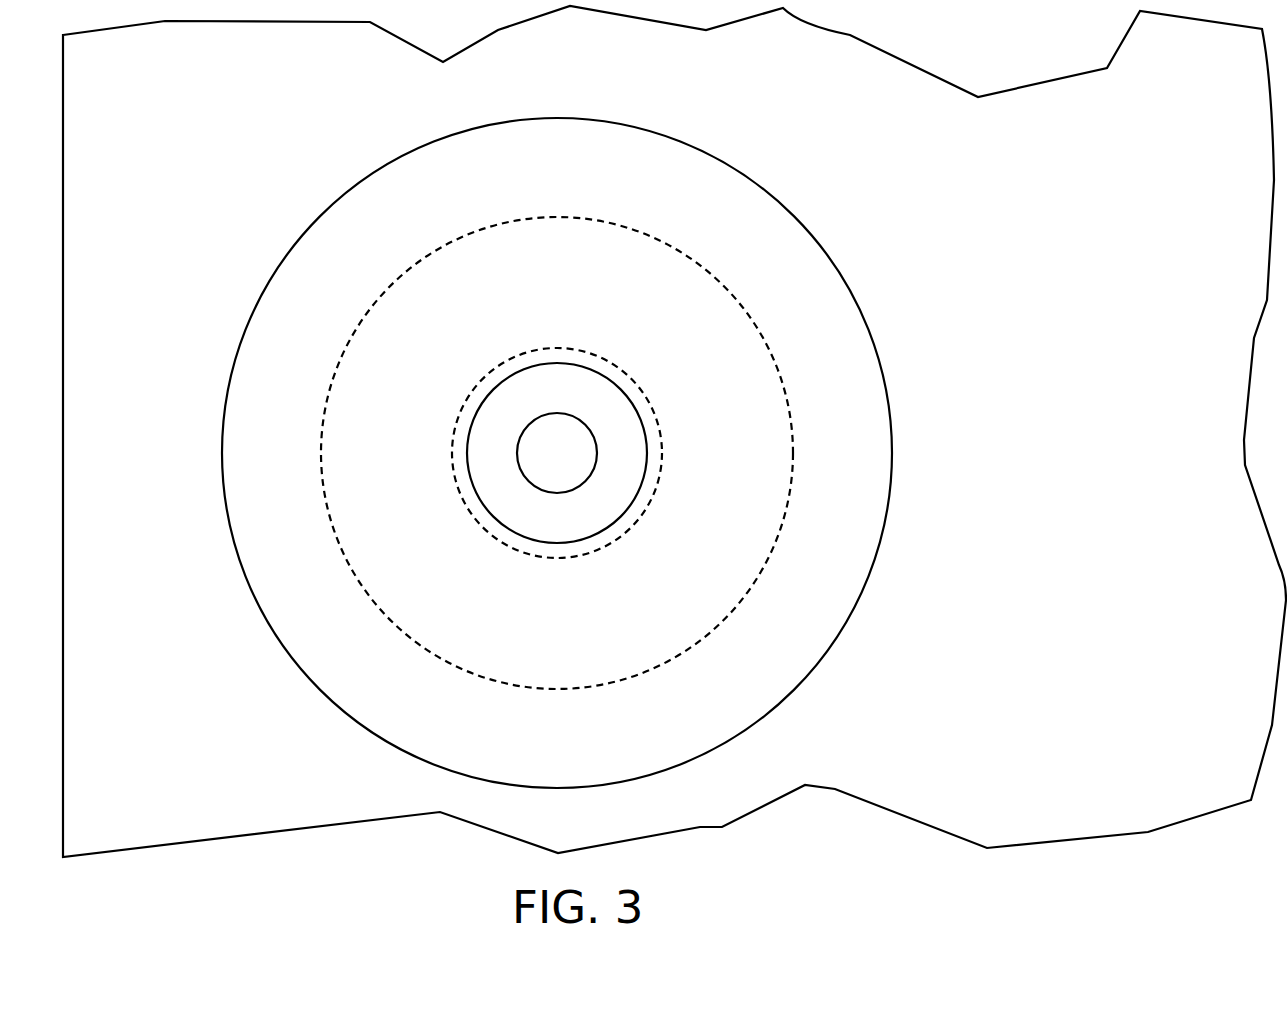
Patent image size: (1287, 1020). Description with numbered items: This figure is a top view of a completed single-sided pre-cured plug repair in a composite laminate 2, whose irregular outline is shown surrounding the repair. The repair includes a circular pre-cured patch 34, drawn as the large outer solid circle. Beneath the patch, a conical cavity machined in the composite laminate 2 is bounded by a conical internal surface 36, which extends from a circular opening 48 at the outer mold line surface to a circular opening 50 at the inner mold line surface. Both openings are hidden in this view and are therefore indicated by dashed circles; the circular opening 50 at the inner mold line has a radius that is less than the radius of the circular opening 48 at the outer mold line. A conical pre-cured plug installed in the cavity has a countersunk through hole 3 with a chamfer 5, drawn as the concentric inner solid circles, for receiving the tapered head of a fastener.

The composite laminate 2 is at (1088, 454).
The pre-cured patch 34 is at (800, 220).
The circular opening 48 is at (440, 249).
The conical internal surface 36 is at (745, 380).
The circular opening 50 is at (650, 498).
The chamfer 5 is at (584, 398).
The countersunk through hole 3 is at (520, 445).